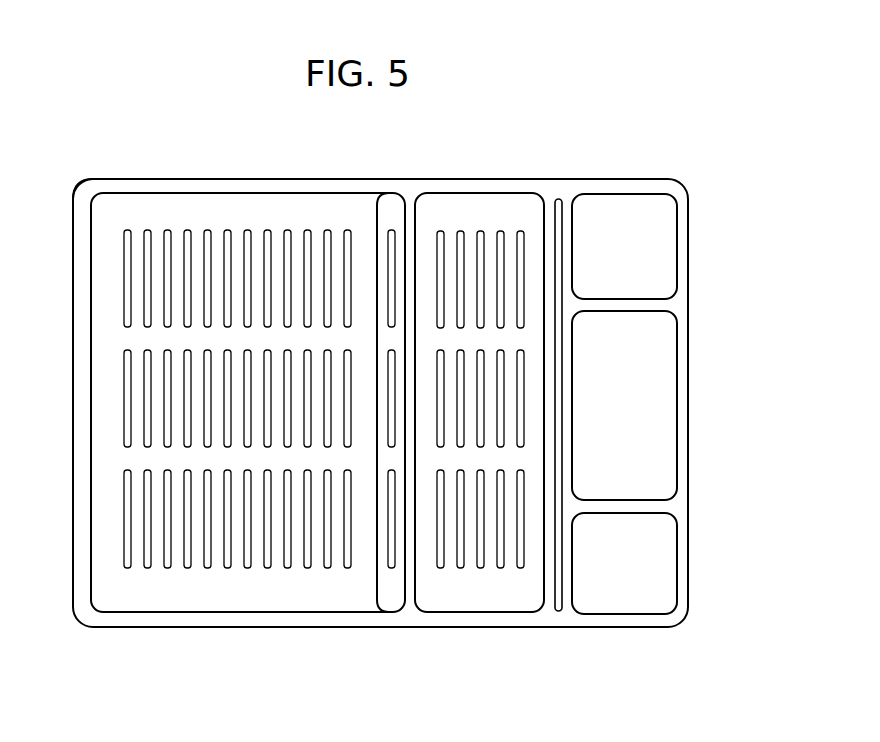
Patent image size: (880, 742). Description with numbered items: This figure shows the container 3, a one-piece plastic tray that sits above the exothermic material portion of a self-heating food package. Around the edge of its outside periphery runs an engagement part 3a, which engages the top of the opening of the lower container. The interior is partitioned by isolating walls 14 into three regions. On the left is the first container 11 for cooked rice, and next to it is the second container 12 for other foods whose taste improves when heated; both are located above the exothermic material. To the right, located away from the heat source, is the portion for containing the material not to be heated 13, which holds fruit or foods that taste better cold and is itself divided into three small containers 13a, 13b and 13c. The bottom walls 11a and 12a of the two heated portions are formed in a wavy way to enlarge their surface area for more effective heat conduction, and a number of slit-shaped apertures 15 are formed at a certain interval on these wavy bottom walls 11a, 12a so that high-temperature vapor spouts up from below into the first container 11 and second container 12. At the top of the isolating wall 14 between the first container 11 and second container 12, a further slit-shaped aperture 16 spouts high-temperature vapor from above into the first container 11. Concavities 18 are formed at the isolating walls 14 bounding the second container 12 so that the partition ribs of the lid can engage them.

The container 3 is at (124, 131).
The engagement part 3a is at (689, 246).
The first container 11 is at (258, 600).
The bottom wall 11a is at (289, 210).
The second container 12 is at (476, 588).
The bottom wall 12a is at (498, 210).
The portion for containing material not to be heated 13 is at (700, 404).
The small container 13a is at (660, 273).
The small container 13b is at (655, 385).
The small container 13c is at (671, 535).
The isolating wall 14 is at (602, 300).
The slit-shaped apertures 15 is at (168, 231).
The slit-shaped aperture 16 is at (390, 352).
The concavity 18 is at (390, 598).